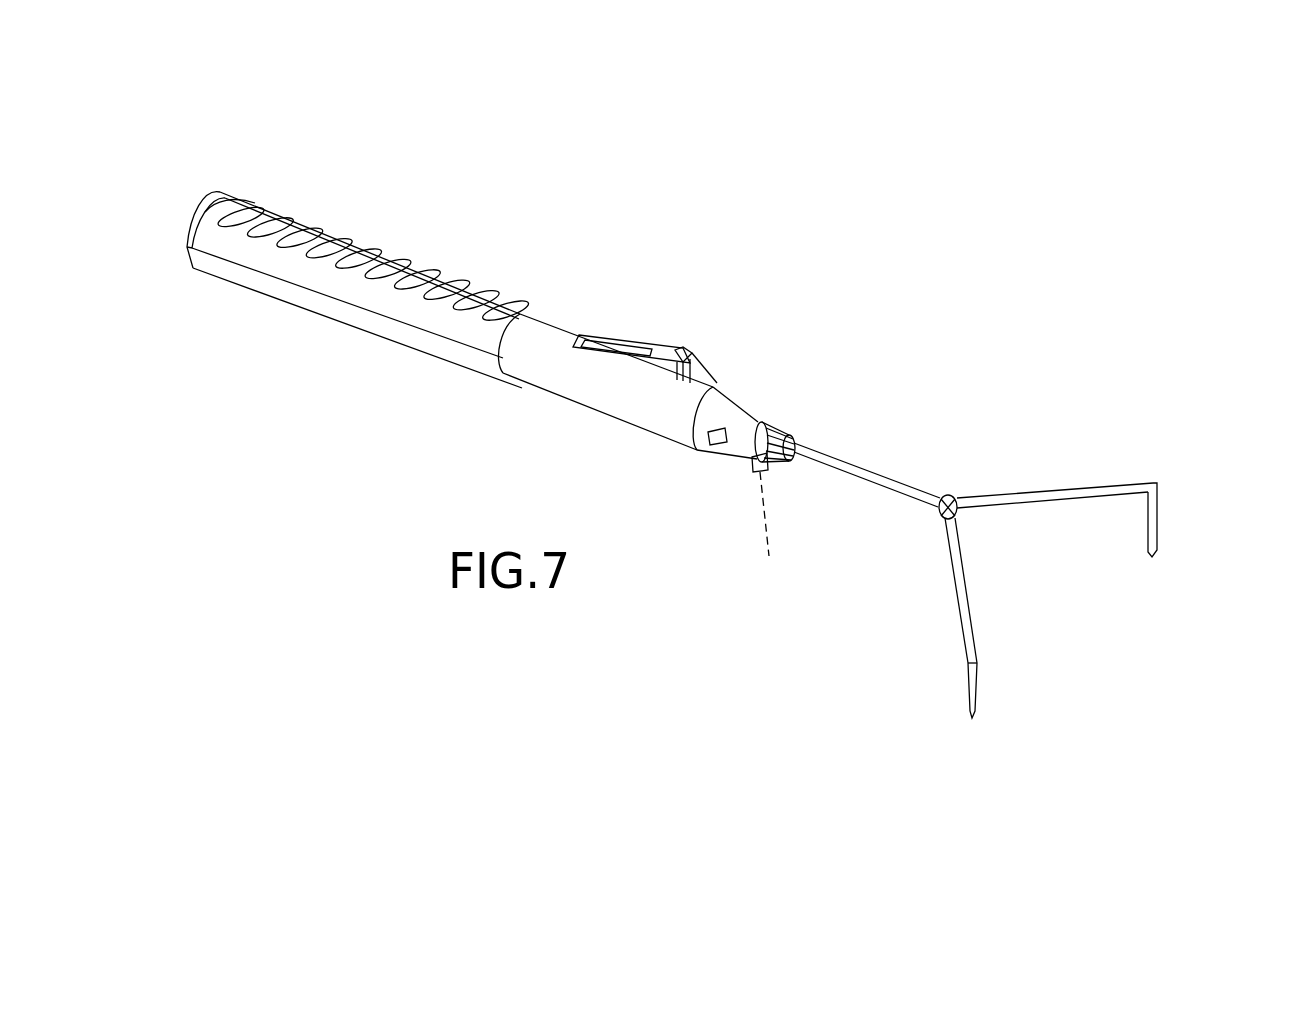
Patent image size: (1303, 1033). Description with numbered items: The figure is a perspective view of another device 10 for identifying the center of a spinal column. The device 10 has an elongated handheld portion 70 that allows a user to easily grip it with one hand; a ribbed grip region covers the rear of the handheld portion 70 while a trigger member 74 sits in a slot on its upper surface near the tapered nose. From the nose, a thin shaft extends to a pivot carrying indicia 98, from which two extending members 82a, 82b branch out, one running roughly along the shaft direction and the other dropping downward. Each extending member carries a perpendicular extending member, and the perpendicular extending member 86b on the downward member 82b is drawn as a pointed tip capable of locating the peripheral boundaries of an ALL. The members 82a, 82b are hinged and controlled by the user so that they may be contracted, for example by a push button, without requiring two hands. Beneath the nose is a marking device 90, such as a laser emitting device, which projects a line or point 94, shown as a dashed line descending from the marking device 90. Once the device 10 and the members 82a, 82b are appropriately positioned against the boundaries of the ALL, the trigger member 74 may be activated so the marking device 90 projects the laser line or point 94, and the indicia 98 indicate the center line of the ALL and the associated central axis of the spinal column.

The device 10 is at (450, 116).
The handheld portion 70 is at (381, 314).
The trigger member 74 is at (690, 348).
The marking device 90 is at (752, 463).
The line or point 94 is at (766, 521).
The indicia 98 is at (948, 497).
The extending member 82a is at (1108, 488).
The extending member 82b is at (955, 594).
The perpendicular extending member 86b is at (975, 681).